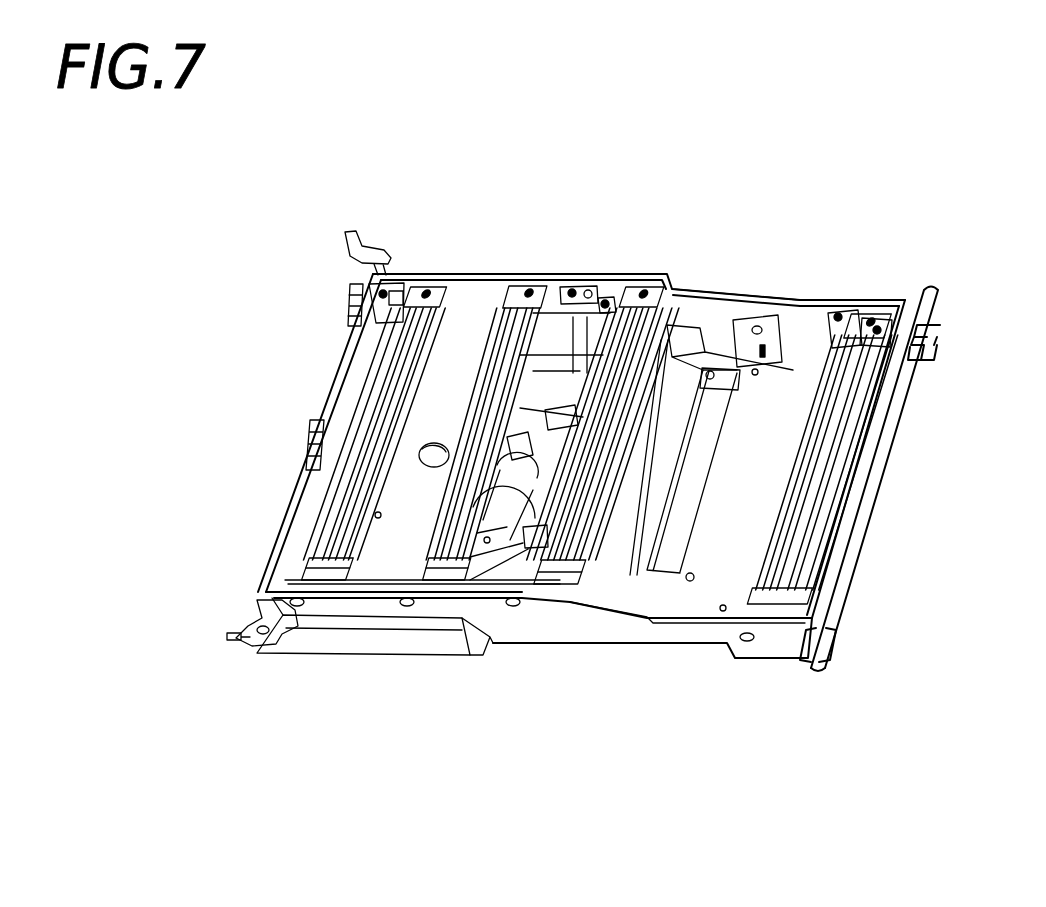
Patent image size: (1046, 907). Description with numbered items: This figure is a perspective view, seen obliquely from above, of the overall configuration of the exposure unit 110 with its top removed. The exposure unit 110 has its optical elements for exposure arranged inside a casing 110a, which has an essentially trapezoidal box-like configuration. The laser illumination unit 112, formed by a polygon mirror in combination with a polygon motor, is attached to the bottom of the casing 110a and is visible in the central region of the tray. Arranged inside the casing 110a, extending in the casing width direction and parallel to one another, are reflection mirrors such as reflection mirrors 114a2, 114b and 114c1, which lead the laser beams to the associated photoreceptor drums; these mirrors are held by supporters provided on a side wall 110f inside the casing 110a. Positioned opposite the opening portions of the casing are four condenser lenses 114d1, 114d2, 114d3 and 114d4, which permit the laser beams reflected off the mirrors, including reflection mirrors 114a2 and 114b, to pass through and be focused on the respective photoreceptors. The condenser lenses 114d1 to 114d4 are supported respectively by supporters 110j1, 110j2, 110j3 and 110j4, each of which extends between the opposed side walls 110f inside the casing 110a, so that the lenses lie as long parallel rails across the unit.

The exposure unit 110 is at (299, 383).
The casing 110a is at (690, 647).
The side wall 110f is at (705, 302).
The supporter 110j1 is at (395, 300).
The supporter 110j2 is at (506, 300).
The supporter 110j3 is at (603, 300).
The supporter 110j4 is at (855, 300).
The laser illumination unit 112 is at (535, 530).
The reflection mirror 114a2 is at (378, 515).
The reflection mirror 114b is at (487, 540).
The reflection mirror 114c1 is at (627, 505).
The condenser lens 114d1 is at (397, 363).
The condenser lens 114d2 is at (490, 345).
The condenser lens 114d3 is at (582, 335).
The condenser lens 114d4 is at (857, 393).